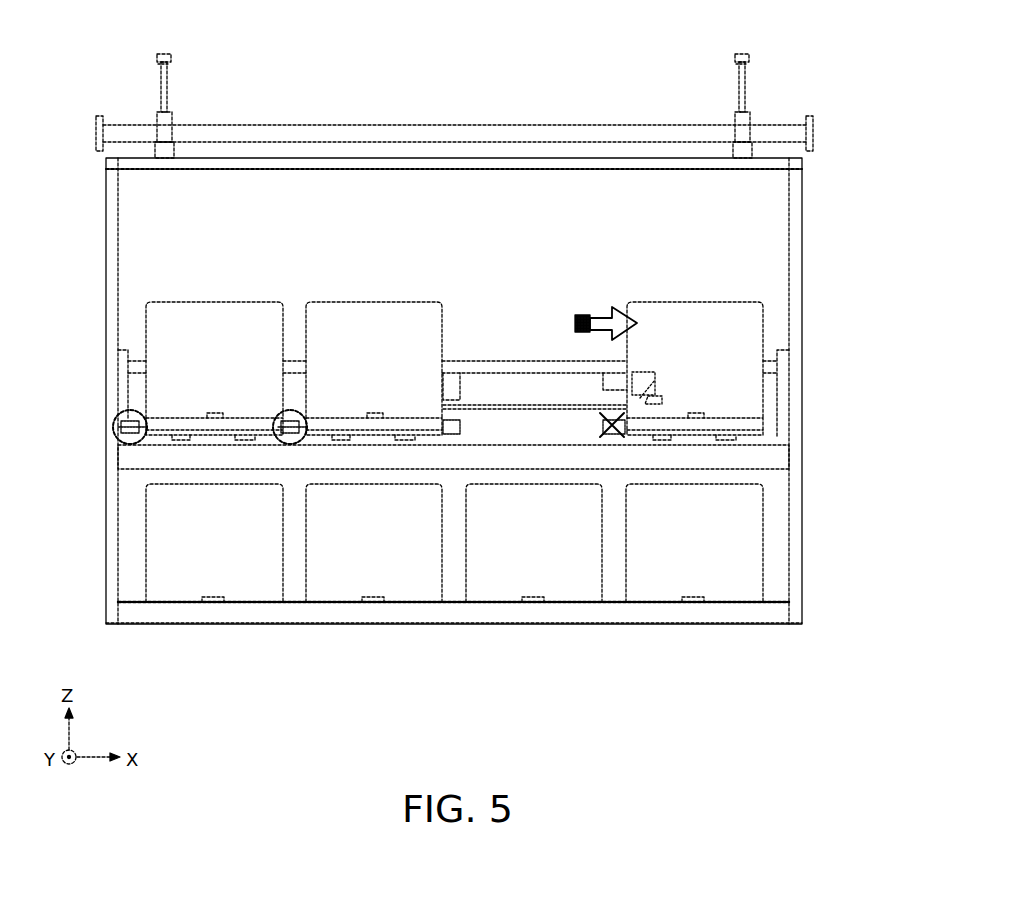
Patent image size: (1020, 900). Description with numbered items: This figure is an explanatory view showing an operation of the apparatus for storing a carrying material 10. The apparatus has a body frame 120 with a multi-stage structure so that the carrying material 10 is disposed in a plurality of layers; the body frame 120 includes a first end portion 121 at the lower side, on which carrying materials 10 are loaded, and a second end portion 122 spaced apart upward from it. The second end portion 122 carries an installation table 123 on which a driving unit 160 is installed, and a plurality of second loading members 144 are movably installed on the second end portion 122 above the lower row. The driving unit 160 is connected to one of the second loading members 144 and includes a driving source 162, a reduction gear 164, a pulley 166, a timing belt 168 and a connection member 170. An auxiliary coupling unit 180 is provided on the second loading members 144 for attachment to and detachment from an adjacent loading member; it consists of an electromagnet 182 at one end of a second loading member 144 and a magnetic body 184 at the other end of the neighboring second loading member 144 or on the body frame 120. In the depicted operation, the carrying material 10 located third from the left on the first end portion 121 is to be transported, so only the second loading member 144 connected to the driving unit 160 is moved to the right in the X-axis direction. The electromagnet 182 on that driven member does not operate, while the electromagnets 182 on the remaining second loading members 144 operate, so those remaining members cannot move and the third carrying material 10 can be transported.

The carrying material 10 is at (345, 315).
The body frame 120 is at (800, 243).
The first end portion 121 is at (755, 614).
The second end portion 122 is at (775, 442).
The installation table 123 is at (775, 365).
The second loading member 144 is at (290, 420).
The driving unit 160 is at (525, 221).
The driving source 162 is at (618, 382).
The reduction gear 164 is at (455, 425).
The pulley 166 is at (662, 400).
The timing belt 168 is at (525, 402).
The connection member 170 is at (655, 395).
The auxiliary coupling unit 180 is at (206, 682).
The electromagnet 182 is at (158, 438).
The magnetic body 184 is at (142, 440).